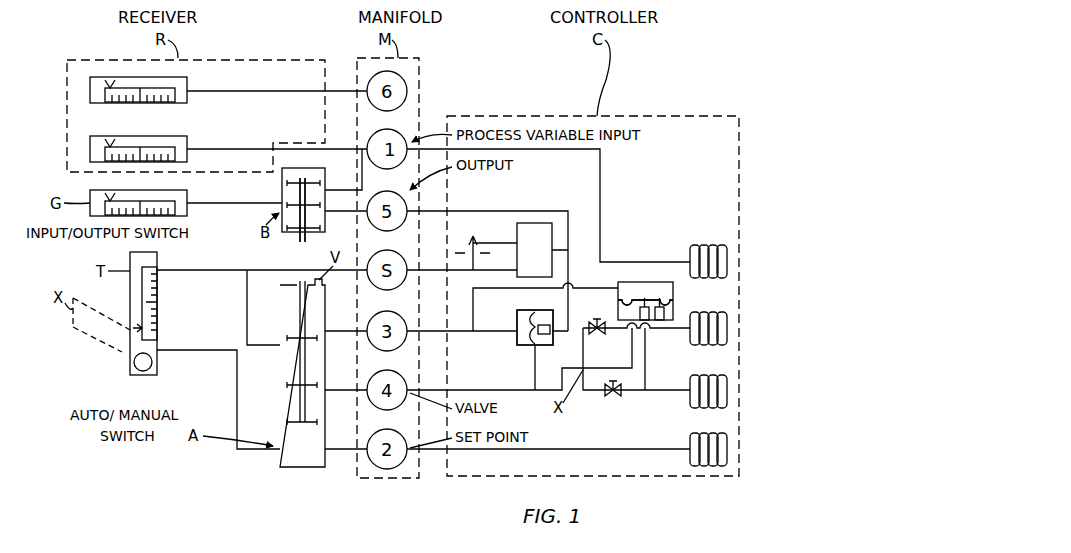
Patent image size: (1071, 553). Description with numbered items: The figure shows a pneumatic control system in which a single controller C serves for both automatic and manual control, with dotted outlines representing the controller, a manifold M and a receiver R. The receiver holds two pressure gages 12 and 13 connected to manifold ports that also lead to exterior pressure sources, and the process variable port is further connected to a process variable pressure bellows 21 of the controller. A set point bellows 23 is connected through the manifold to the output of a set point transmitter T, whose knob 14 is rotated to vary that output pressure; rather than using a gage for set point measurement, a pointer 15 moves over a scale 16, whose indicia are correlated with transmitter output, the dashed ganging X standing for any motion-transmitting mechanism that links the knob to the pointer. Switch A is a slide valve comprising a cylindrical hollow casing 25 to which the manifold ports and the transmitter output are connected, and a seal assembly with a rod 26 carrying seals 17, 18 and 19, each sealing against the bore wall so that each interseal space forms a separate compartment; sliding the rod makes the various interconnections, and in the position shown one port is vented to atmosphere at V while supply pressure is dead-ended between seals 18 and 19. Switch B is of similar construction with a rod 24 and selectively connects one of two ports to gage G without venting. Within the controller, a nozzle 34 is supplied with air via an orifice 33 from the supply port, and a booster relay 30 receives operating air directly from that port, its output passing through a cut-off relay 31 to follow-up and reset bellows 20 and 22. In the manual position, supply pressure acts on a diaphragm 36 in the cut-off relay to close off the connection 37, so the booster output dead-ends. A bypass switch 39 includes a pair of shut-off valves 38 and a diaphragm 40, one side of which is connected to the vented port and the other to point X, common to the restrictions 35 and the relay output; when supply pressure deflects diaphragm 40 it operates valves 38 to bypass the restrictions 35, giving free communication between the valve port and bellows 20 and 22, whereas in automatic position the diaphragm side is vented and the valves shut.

The pressure gage 12 is at (193, 85).
The pressure gage 13 is at (193, 144).
The knob 14 is at (134, 366).
The pointer 15 is at (142, 330).
The scale 16 is at (152, 303).
The seal 17 is at (296, 423).
The seal 18 is at (289, 387).
The seal 19 is at (289, 340).
The follow-up bellows 20 is at (690, 322).
The process variable pressure bellows 21 is at (690, 255).
The reset bellows 22 is at (690, 385).
The set point bellows 23 is at (690, 452).
The rod 24 is at (305, 243).
The cylindrical hollow casing 25 is at (288, 373).
The rod 26 is at (305, 318).
The booster relay 30 is at (545, 261).
The cut-off relay 31 is at (520, 343).
The orifice 33 is at (458, 250).
The nozzle 34 is at (476, 238).
The restrictions 35 is at (603, 333).
The diaphragm 36 is at (528, 325).
The connection 37 is at (546, 345).
The shut-off valves 38 is at (661, 322).
The bypass switch 39 is at (618, 296).
The diaphragm 40 is at (637, 298).